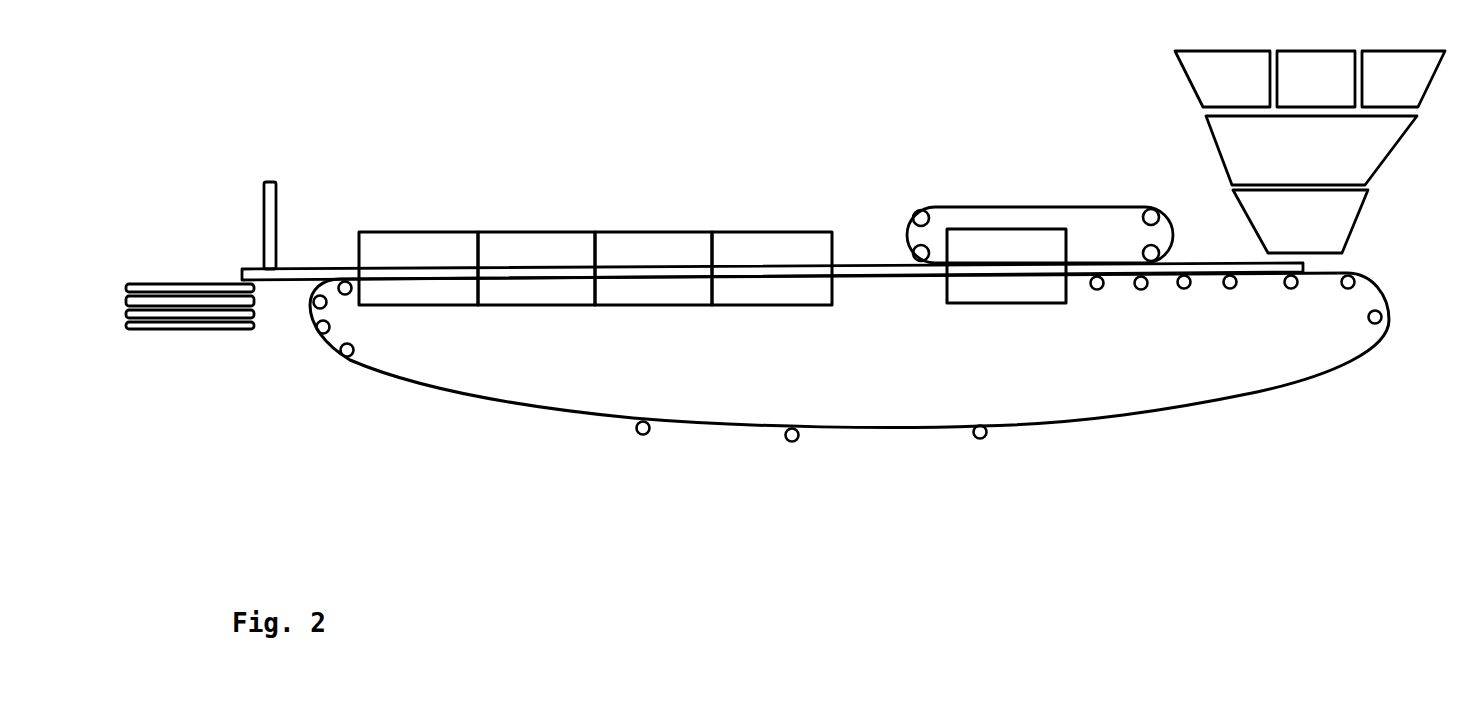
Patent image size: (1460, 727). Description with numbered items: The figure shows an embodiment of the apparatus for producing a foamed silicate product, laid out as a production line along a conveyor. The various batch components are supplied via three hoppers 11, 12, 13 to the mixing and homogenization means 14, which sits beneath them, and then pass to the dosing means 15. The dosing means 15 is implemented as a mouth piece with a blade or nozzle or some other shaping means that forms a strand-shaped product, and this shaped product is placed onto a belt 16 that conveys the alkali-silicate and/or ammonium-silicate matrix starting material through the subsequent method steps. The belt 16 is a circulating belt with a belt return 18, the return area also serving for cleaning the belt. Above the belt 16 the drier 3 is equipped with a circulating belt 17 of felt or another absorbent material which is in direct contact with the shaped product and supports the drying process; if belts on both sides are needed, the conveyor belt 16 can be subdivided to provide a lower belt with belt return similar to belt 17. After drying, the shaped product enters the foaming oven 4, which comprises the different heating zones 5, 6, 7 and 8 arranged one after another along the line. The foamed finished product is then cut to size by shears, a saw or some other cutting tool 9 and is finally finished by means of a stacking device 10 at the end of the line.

The drier 3 is at (1006, 266).
The foaming oven 4 is at (595, 247).
The heating zone 5 is at (772, 268).
The heating zone 6 is at (653, 268).
The heating zone 7 is at (536, 268).
The heating zone 8 is at (418, 268).
The cutting tool 9 is at (270, 214).
The stacking device 10 is at (190, 321).
The hopper 11 is at (1222, 79).
The hopper 12 is at (1316, 79).
The hopper 13 is at (1403, 79).
The mixing and homogenization means 14 is at (1311, 150).
The dosing means 15 is at (1300, 221).
The belt 16 is at (860, 350).
The circulating belt 17 is at (1040, 221).
The belt return 18 is at (848, 365).